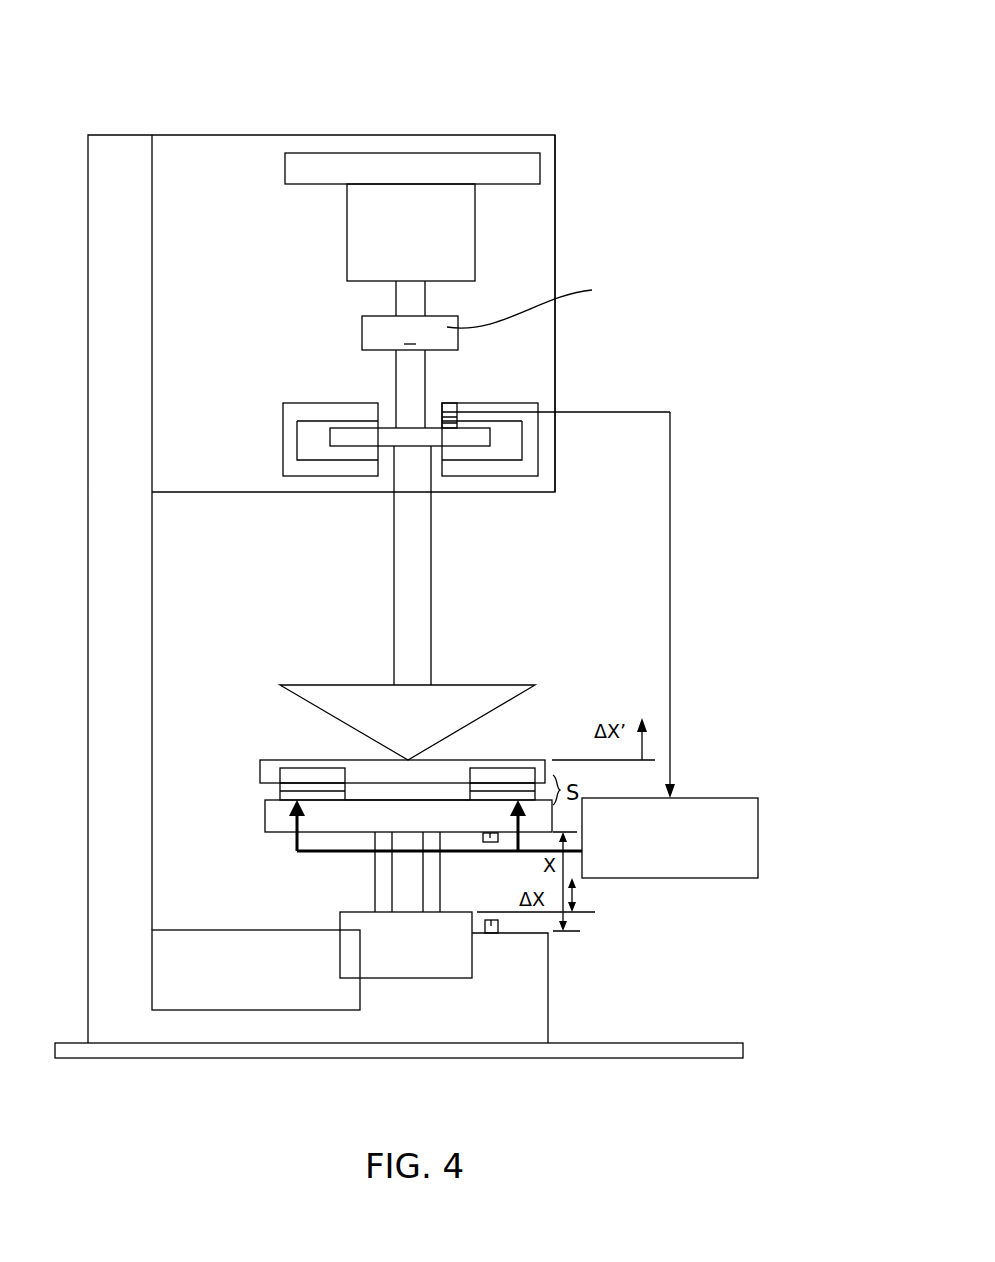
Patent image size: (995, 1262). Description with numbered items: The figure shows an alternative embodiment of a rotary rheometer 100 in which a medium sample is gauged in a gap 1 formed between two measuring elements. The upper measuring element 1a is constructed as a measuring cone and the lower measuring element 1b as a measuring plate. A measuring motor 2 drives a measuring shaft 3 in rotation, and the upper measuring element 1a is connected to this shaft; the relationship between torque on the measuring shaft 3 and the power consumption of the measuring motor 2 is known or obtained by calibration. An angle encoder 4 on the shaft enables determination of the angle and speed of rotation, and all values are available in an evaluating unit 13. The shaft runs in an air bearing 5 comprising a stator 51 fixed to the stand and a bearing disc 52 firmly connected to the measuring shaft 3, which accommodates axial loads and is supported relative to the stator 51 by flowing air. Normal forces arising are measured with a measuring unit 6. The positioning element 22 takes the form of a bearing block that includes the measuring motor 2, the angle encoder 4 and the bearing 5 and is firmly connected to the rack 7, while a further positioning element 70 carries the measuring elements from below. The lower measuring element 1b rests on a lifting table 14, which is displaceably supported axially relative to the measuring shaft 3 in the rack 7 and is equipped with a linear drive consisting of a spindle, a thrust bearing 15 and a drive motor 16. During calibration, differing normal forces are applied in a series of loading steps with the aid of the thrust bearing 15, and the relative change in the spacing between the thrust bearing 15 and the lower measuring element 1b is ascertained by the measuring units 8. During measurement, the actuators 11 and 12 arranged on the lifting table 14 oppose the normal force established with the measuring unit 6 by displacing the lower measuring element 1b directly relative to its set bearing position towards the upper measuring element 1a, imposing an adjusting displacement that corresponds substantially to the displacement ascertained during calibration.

The rotary rheometer 100 is at (193, 92).
The gap 1 is at (402, 720).
The upper measuring element 1a is at (470, 692).
The lower measuring element 1b is at (455, 770).
The measuring motor 2 is at (460, 259).
The positioning element 22 is at (541, 275).
The measuring shaft 3 is at (420, 580).
The angle encoder 4 is at (520, 315).
The air bearing 5 is at (459, 476).
The stator 51 is at (325, 470).
The bearing disc 52 is at (415, 445).
The measuring unit 6 is at (450, 413).
The rack 7 is at (127, 653).
The measuring units 8 is at (493, 920).
The actuator 11 is at (280, 793).
The actuator 12 is at (510, 775).
The evaluating unit 13 is at (717, 798).
The lifting table 14 is at (375, 885).
The thrust bearing 15 is at (345, 920).
The drive motor 16 is at (195, 955).
The positioning element 70 is at (653, 1043).